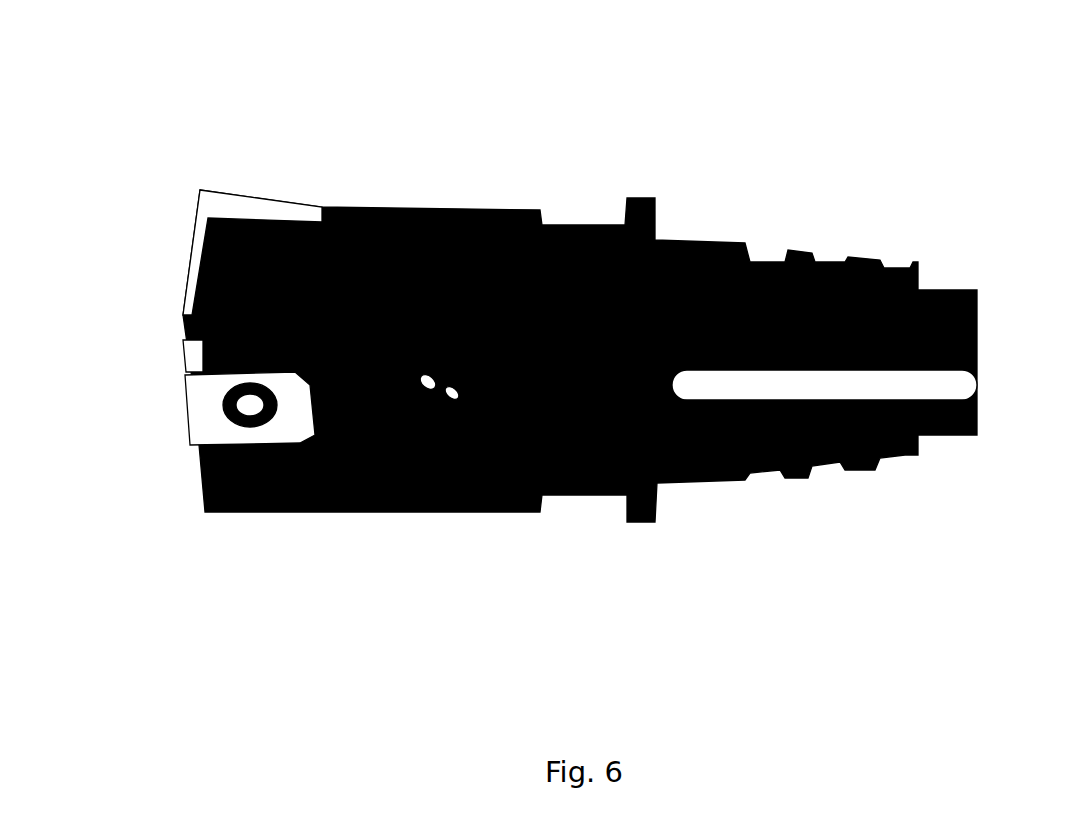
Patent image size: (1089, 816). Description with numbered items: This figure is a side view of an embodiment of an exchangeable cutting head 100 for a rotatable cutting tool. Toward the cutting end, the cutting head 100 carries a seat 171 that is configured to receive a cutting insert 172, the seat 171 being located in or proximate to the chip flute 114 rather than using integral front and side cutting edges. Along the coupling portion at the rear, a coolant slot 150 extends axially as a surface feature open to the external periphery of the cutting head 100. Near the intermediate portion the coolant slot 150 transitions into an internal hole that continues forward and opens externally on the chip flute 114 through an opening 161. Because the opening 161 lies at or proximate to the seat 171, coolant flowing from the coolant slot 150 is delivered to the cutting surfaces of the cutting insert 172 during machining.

The cutting head 100 is at (417, 63).
The chip flute 114 is at (378, 330).
The coolant slot 150 is at (965, 378).
The opening 161 is at (432, 376).
The seat 171 is at (200, 486).
The cutting insert 172 is at (192, 445).